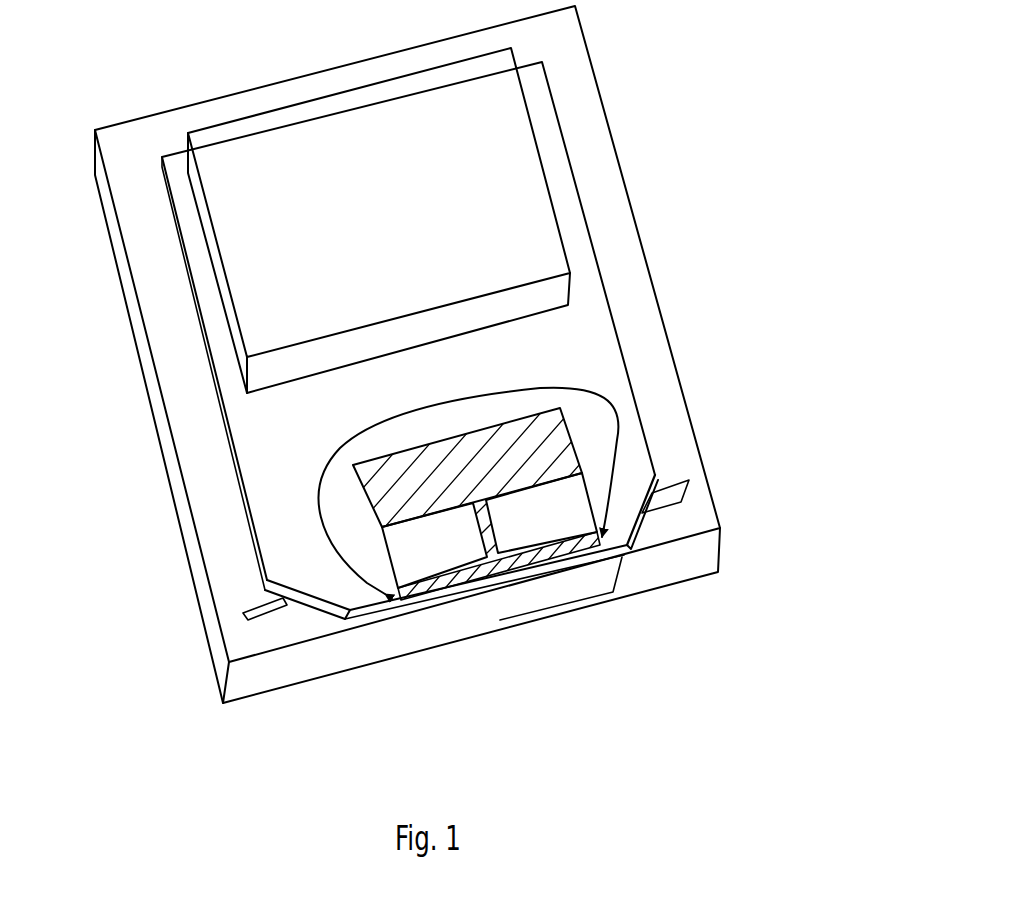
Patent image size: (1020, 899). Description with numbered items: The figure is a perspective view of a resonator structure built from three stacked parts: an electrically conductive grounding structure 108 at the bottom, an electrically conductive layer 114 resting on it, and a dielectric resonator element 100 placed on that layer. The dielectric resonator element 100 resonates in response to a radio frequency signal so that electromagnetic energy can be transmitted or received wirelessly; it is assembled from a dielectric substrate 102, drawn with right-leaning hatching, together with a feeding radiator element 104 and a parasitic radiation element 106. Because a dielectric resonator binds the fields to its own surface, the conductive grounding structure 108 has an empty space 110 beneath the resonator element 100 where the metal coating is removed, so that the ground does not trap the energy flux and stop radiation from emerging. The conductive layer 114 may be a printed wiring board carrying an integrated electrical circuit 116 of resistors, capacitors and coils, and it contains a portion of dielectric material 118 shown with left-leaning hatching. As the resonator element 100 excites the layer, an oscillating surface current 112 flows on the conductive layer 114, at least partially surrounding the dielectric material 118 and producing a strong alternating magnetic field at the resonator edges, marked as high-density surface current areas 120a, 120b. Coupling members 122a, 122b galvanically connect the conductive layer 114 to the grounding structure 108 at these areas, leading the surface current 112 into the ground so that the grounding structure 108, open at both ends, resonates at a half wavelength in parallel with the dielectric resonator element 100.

The dielectric resonator element 100 is at (428, 600).
The dielectric substrate 102 is at (380, 538).
The feeding radiator element 104 is at (513, 537).
The parasitic radiation element 106 is at (447, 558).
The electrically conductive grounding structure 108 is at (660, 316).
The empty space 110 is at (413, 627).
The surface current 112 is at (332, 547).
The electrically conductive layer 114 is at (583, 215).
The integrated electrical circuit 116 is at (537, 147).
The dielectric material 118 is at (378, 498).
The high-density surface current area 120a is at (353, 607).
The high-density surface current area 120b is at (627, 545).
The coupling member 122a is at (243, 612).
The coupling member 122b is at (670, 480).